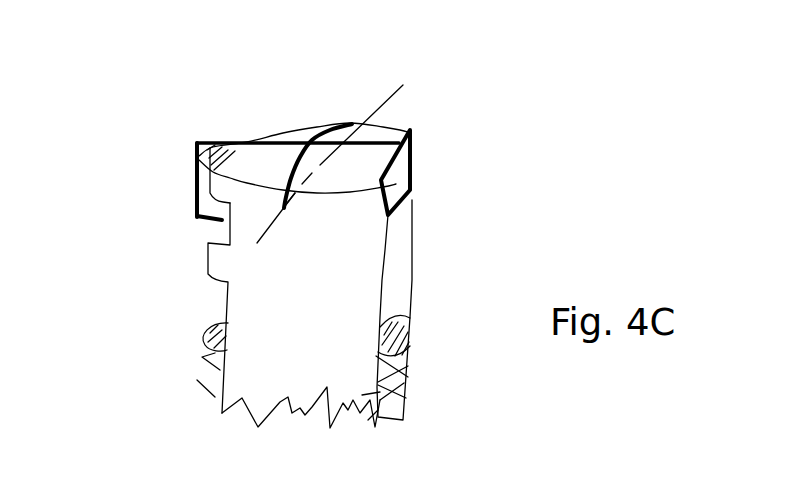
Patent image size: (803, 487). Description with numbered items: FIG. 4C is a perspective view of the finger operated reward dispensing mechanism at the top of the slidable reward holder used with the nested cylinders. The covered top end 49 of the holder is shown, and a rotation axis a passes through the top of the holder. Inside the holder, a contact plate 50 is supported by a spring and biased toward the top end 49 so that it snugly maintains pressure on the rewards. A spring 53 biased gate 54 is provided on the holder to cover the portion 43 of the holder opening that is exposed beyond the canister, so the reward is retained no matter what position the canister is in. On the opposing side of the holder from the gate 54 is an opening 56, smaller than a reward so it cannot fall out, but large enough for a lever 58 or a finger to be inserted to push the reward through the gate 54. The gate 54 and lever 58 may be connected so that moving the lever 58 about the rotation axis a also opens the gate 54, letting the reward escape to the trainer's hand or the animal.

The portion of the holder opening 43 is at (440, 161).
The top end 49 is at (373, 128).
The rotation axis a is at (393, 94).
The contact plate 50 is at (410, 325).
The spring 53 is at (244, 141).
The gate 54 is at (397, 182).
The opening 56 is at (218, 229).
The lever 58 is at (196, 189).